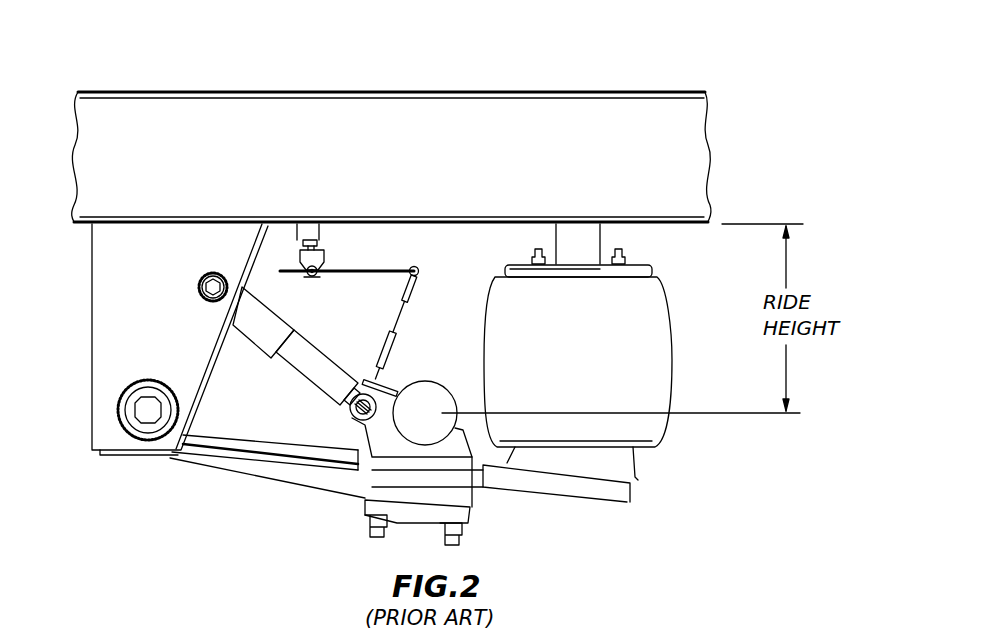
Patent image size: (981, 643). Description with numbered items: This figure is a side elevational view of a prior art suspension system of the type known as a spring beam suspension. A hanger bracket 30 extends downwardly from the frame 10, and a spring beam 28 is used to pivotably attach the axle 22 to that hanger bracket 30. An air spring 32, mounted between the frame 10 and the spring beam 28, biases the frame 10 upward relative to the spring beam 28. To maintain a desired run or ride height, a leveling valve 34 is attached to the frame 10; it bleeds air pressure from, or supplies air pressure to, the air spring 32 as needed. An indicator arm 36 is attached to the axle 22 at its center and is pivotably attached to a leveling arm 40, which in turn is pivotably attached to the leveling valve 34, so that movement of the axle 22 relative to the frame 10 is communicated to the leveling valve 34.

The frame 10 is at (601, 91).
The axle 22 is at (421, 382).
The spring beam 28 is at (258, 478).
The hanger bracket 30 is at (92, 306).
The air spring 32 is at (672, 310).
The leveling valve 34 is at (327, 256).
The indicator arm 36 is at (410, 311).
The leveling arm 40 is at (352, 275).